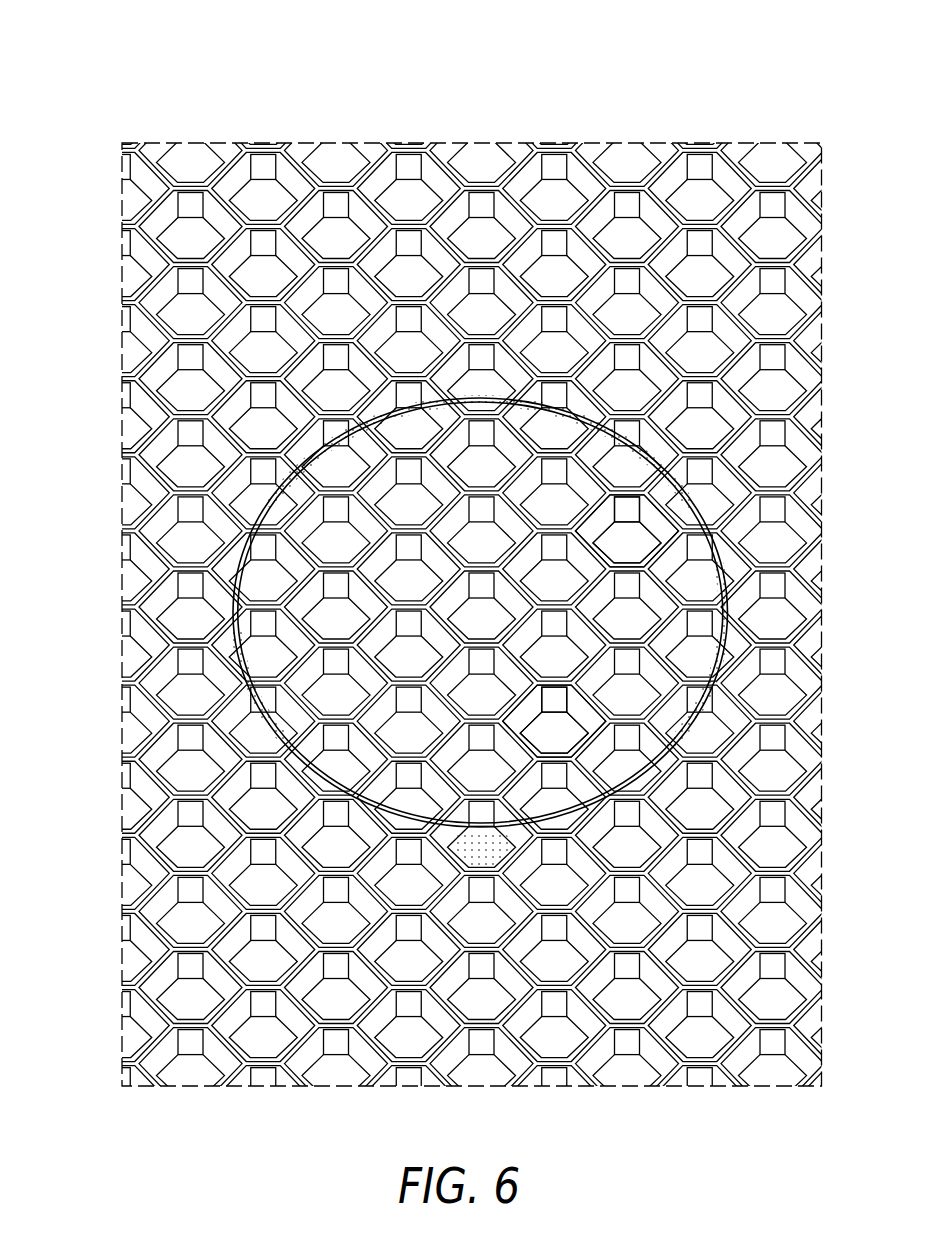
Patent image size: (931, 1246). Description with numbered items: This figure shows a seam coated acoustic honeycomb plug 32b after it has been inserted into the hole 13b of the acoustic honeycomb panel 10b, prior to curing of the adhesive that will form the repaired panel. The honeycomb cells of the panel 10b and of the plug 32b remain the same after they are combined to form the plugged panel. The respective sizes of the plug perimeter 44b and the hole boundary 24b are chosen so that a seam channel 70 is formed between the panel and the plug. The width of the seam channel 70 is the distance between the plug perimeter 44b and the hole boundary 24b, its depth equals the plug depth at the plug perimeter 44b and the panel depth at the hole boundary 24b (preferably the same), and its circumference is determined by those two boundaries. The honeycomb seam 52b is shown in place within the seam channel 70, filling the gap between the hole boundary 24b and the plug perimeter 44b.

The acoustic honeycomb panel 10b is at (574, 115).
The seam channel 70 is at (252, 528).
The plug perimeter 44b is at (368, 455).
The hole boundary 24b is at (271, 695).
The honeycomb seam 52b is at (728, 606).
The acoustic honeycomb plug 32b is at (660, 510).
The hole 13b is at (558, 714).